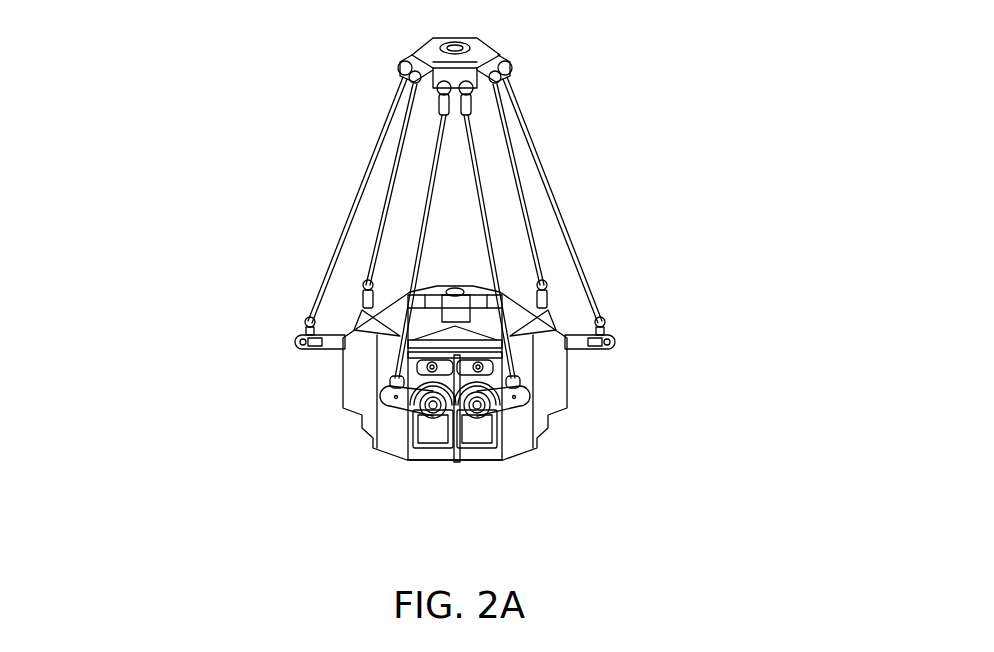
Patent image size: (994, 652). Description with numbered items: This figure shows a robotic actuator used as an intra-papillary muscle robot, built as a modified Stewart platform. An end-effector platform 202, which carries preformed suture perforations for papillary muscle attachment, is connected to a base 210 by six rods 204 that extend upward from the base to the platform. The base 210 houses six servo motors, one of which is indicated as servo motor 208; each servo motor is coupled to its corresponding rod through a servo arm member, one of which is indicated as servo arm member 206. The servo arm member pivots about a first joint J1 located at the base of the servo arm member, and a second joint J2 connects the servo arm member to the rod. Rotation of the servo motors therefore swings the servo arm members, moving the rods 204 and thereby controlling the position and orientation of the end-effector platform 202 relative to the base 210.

The end-effector platform 202 is at (478, 50).
The rods 204 is at (326, 161).
The servo arm member 206 is at (500, 400).
The servo motor 208 is at (478, 435).
The base 210 is at (305, 382).
The first joint J1 is at (477, 410).
The second joint J2 is at (513, 392).